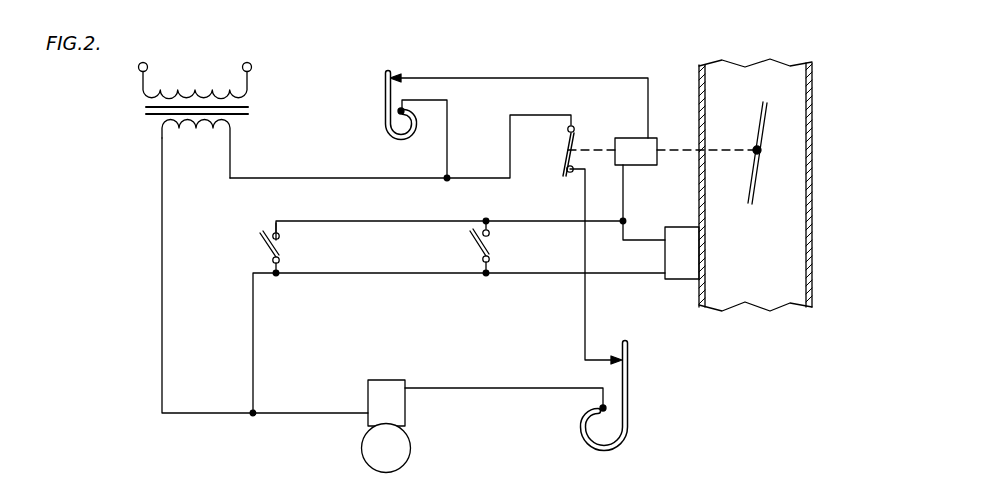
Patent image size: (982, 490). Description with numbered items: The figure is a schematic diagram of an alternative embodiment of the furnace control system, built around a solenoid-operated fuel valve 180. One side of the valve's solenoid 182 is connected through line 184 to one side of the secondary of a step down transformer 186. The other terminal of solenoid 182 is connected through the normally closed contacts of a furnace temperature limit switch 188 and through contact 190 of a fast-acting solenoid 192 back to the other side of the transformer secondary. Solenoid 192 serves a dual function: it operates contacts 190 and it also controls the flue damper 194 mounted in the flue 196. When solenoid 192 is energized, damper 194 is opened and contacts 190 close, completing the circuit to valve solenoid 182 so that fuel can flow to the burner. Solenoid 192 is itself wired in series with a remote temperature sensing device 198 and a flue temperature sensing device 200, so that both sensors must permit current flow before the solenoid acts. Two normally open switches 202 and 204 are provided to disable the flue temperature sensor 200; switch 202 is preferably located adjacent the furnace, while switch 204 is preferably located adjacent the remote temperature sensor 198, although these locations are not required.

The solenoid-operated fuel valve 180 is at (411, 451).
The solenoid 182 is at (387, 390).
The line 184 is at (162, 371).
The step down transformer 186 is at (232, 128).
The furnace temperature limit switch 188 is at (629, 432).
The contact 190 is at (560, 160).
The solenoid 192 is at (625, 138).
The flue damper 194 is at (757, 123).
The flue 196 is at (815, 203).
The remote temperature sensing device 198 is at (384, 120).
The flue temperature sensing device 200 is at (689, 264).
The normally open switch 202 is at (476, 246).
The normally open switch 204 is at (262, 246).